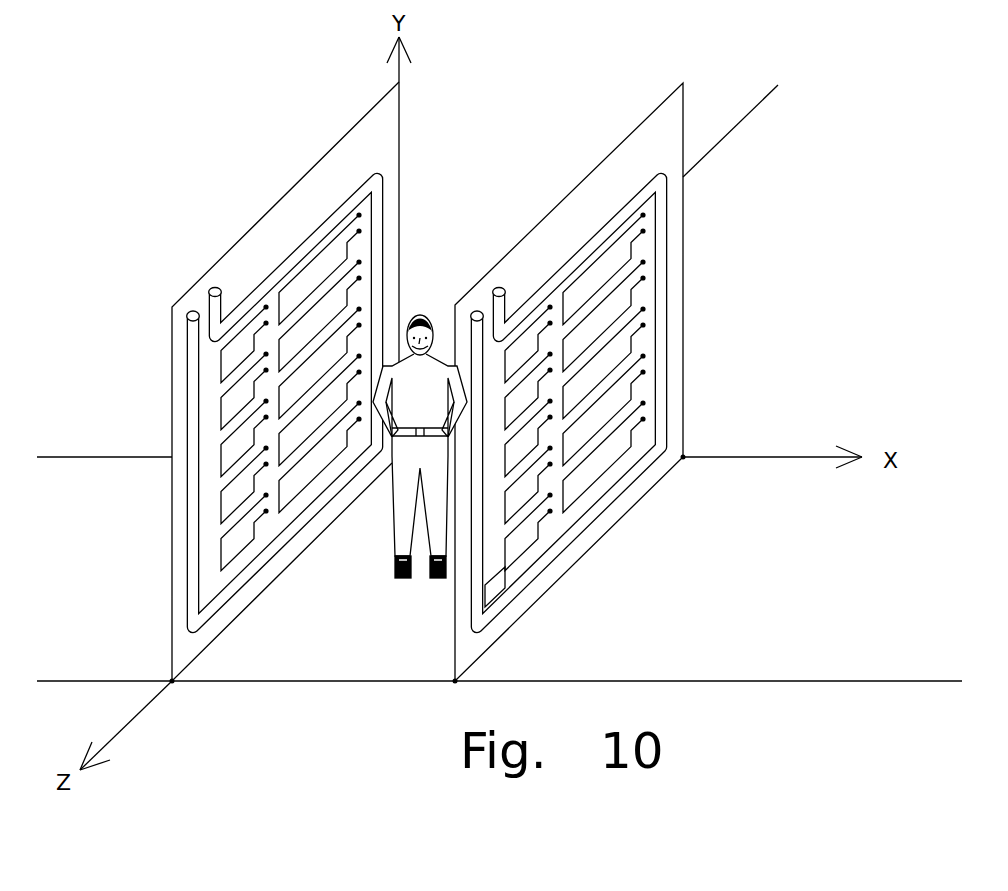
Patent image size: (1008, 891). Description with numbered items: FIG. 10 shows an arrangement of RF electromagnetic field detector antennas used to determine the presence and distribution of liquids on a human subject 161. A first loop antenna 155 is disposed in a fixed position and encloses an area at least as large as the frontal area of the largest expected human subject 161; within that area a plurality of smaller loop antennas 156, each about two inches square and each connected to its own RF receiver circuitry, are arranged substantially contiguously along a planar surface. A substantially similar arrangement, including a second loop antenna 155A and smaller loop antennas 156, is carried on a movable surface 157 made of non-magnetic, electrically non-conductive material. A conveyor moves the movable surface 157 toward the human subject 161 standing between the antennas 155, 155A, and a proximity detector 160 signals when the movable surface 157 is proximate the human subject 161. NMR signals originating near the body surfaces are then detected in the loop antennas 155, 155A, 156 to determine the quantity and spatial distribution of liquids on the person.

The first loop antenna 155 is at (292, 245).
The second loop antenna 155A is at (580, 248).
The smaller loop antennas 156 is at (221, 555).
The movable surface 157 is at (453, 645).
The proximity detector 160 is at (500, 600).
The human subject 161 is at (396, 512).